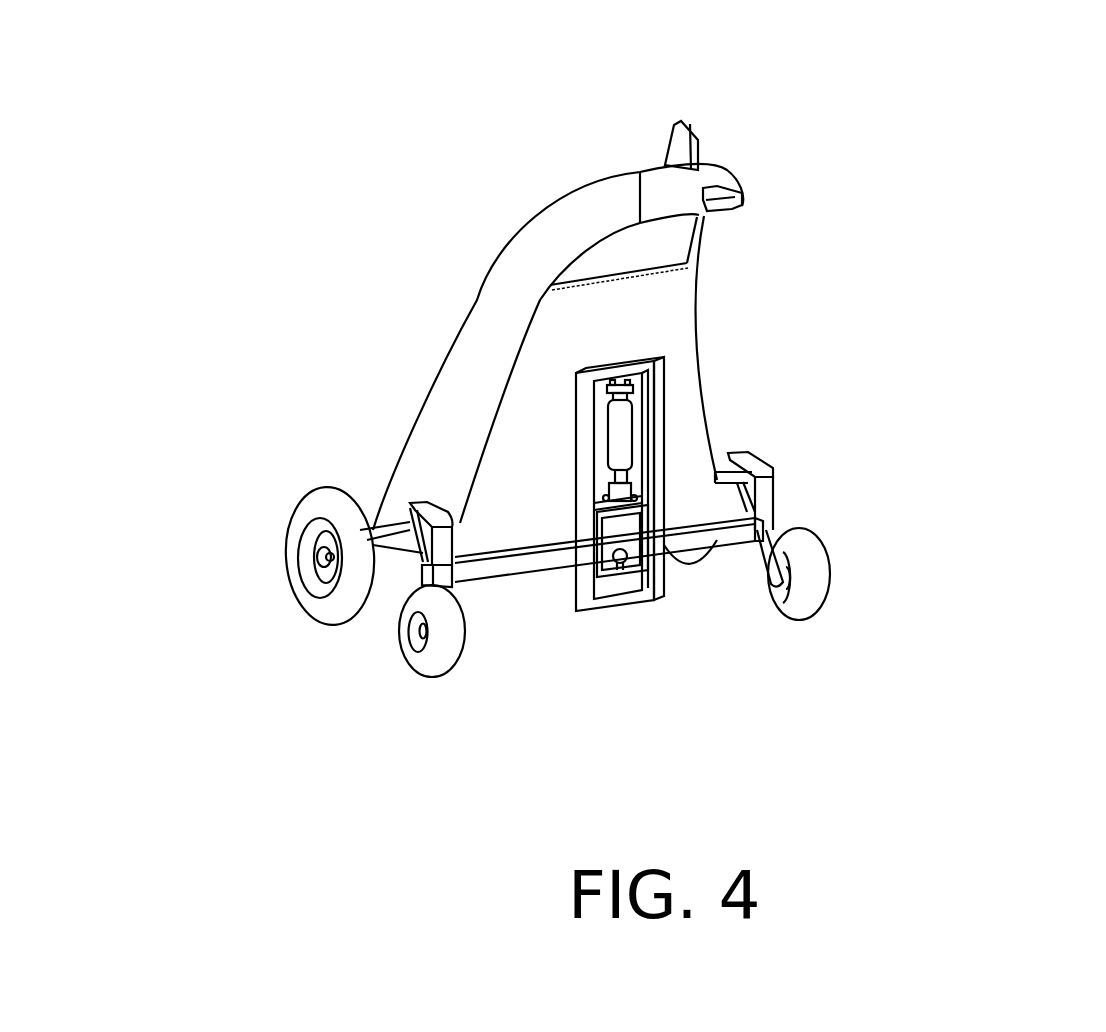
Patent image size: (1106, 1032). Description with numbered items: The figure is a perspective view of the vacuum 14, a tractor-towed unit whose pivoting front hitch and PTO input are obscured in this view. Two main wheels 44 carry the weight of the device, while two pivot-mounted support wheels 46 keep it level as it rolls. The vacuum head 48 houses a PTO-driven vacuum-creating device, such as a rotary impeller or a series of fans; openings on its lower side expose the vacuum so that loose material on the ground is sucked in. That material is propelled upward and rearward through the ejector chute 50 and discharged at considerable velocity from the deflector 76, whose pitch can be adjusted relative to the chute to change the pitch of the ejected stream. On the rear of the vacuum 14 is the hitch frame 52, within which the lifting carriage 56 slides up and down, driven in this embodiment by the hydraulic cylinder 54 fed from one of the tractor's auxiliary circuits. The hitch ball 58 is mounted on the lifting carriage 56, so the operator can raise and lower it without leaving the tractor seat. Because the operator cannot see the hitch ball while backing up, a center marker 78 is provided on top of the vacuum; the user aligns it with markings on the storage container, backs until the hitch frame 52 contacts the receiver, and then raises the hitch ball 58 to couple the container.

The vacuum 14 is at (917, 490).
The main wheels 44 is at (332, 620).
The support wheels 46 is at (438, 642).
The vacuum head 48 is at (407, 515).
The ejector chute 50 is at (592, 188).
The hitch frame 52 is at (660, 387).
The hydraulic cylinder 54 is at (620, 453).
The lifting carriage 56 is at (645, 537).
The hitch ball 58 is at (618, 557).
The deflector 76 is at (710, 175).
The center marker 78 is at (680, 143).